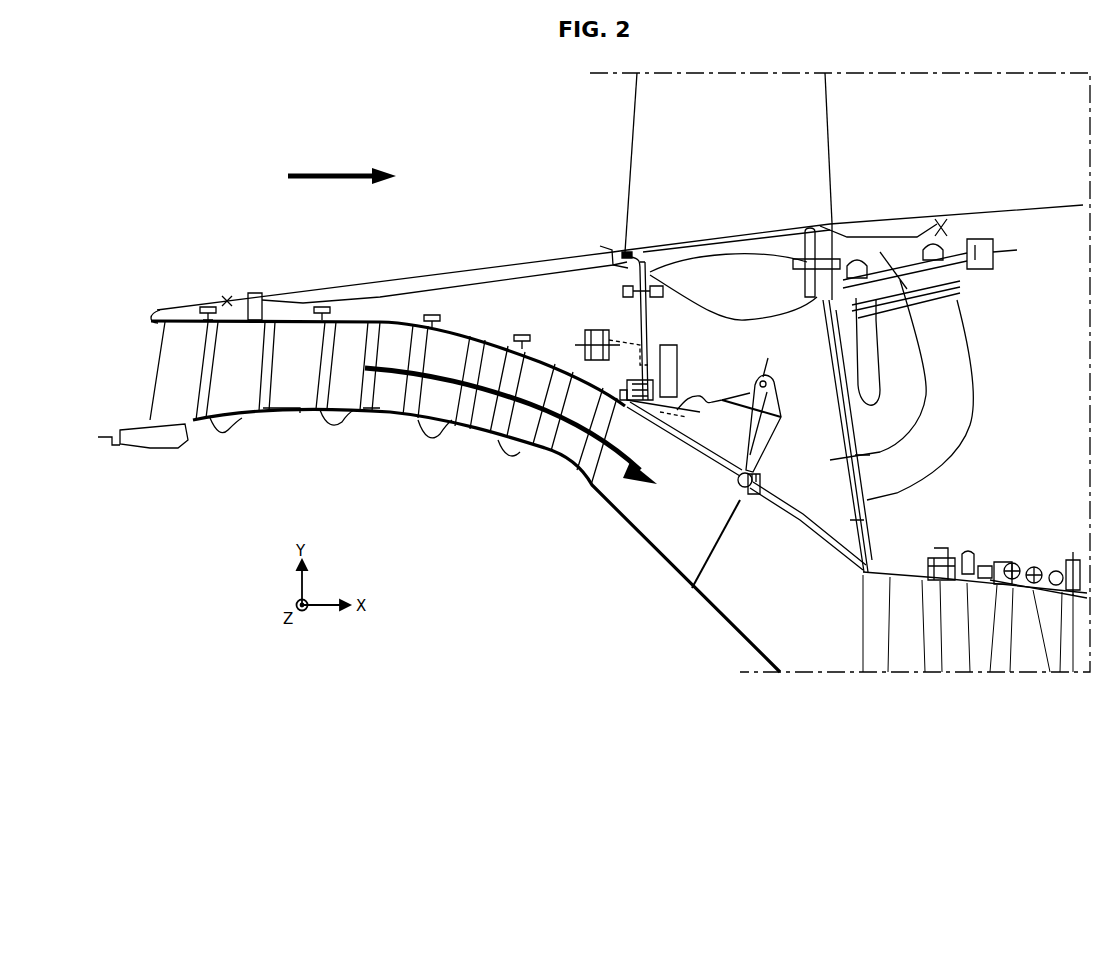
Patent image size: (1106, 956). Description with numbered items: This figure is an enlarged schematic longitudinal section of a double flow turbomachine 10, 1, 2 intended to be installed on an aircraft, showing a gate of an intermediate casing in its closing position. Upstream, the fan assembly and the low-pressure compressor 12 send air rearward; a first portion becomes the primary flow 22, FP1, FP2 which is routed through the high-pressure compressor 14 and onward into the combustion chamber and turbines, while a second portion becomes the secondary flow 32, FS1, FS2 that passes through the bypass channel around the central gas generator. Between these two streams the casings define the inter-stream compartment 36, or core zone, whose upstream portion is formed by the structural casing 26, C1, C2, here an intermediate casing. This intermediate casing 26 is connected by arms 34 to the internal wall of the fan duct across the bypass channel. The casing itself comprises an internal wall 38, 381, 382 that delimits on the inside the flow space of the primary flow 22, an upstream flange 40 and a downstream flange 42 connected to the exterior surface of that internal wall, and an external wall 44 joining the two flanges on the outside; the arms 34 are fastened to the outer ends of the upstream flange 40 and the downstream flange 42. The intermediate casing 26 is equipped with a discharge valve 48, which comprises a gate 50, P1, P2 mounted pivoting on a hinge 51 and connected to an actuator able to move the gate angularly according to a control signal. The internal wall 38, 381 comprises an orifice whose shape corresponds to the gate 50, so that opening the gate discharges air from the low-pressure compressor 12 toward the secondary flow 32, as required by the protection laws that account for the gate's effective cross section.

The first turbomachine 1 is at (592, 368).
The turbomachine 2 is at (412, 98).
The turbomachine 10 is at (458, 225).
The low-pressure compressor 12 is at (481, 334).
The high-pressure compressor 14 is at (1030, 548).
The secondary flow FS1 is at (310, 152).
The secondary flow FS2 is at (310, 152).
The secondary flow 32 is at (340, 168).
The first primary gas flow FP1 is at (377, 403).
The primary gas flow FP2 is at (377, 403).
The primary flow 22 is at (537, 407).
The first intermediate casing C1 is at (680, 162).
The intermediate casing C2 is at (680, 162).
The structural casing 26 is at (720, 185).
The arms 34 is at (802, 151).
The inter-stream compartment 36 is at (630, 328).
The upstream flange 40 is at (627, 340).
The external wall 44 is at (738, 332).
The discharge valve 48 is at (733, 378).
The internal wall 38 is at (486, 540).
The first internal wall 381 is at (486, 540).
The internal wall 382 is at (723, 470).
The hinge 51 is at (757, 482).
The first gate P1 is at (746, 490).
The gate P2 is at (746, 490).
The first gate 50 is at (810, 533).
The downstream flange 42 is at (867, 528).